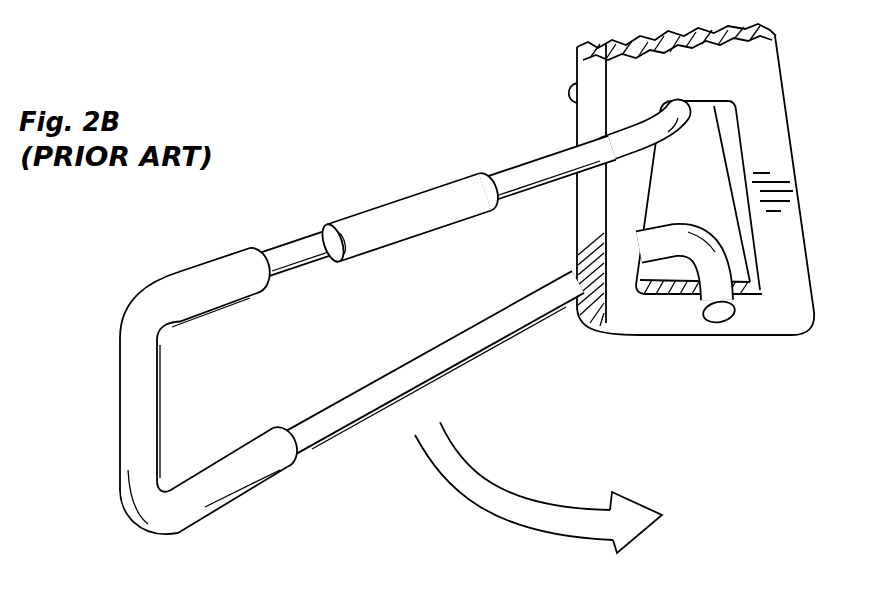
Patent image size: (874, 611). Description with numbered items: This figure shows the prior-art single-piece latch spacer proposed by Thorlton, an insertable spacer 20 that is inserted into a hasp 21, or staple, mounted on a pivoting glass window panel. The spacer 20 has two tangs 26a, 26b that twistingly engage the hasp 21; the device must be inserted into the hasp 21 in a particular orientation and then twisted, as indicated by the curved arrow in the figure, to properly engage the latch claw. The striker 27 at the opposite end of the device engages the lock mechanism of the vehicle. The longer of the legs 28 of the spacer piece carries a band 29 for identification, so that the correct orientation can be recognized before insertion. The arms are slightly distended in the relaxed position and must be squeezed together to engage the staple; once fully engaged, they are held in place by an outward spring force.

The insertable spacer 20 is at (433, 293).
The hasp 21 is at (644, 342).
The tang 26a is at (551, 73).
The tang 26b is at (725, 345).
The striker 27 is at (102, 330).
The leg 28 is at (306, 236).
The band 29 is at (379, 272).